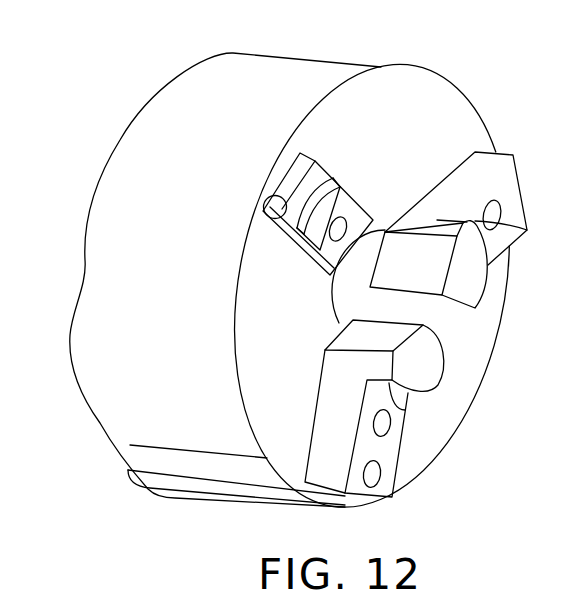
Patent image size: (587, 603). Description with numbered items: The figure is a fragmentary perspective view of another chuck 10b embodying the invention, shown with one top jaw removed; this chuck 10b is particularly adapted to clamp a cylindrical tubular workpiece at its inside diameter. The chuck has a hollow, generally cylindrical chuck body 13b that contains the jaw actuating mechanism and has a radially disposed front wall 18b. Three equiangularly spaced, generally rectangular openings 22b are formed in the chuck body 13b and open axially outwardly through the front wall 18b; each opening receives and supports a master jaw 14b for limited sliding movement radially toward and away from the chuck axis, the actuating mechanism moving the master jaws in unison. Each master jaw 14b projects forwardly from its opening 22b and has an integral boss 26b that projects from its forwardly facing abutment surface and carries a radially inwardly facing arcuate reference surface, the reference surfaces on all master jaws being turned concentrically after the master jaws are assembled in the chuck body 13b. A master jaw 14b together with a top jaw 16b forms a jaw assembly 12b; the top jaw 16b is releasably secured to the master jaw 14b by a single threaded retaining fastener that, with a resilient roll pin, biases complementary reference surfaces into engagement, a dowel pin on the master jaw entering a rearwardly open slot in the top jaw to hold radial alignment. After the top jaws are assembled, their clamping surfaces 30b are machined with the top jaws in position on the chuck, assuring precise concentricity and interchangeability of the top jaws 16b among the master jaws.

The chuck 10b is at (455, 72).
The jaw assembly 12b is at (439, 295).
The chuck body 13b is at (157, 460).
The master jaw 14b is at (303, 147).
The top jaw 16b is at (508, 283).
The front wall 18b is at (415, 462).
The opening 22b is at (270, 217).
The boss 26b is at (340, 194).
The clamping surface 30b is at (517, 222).